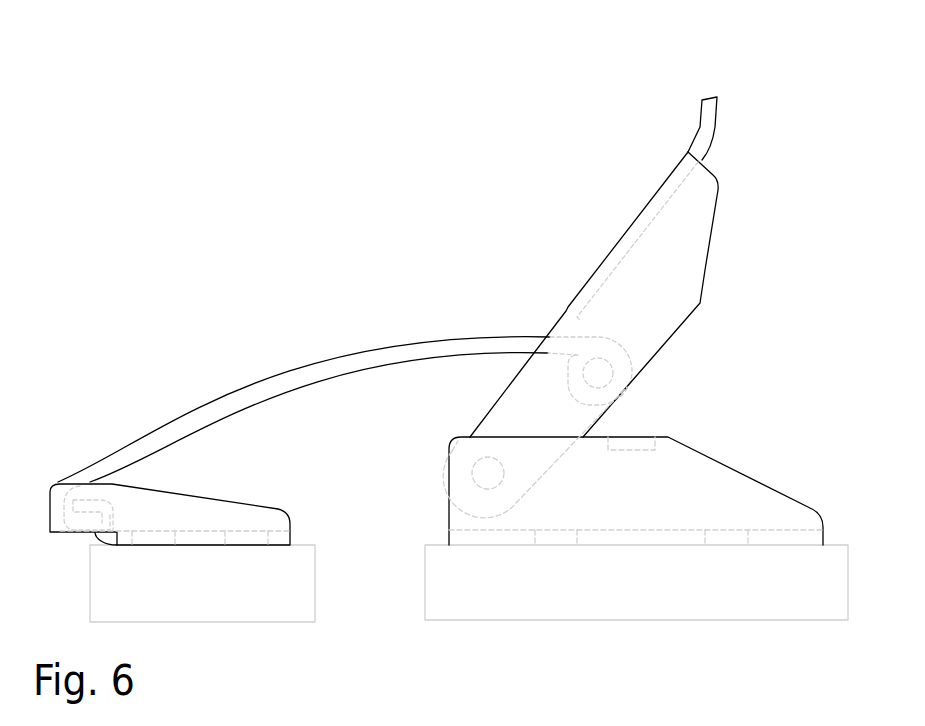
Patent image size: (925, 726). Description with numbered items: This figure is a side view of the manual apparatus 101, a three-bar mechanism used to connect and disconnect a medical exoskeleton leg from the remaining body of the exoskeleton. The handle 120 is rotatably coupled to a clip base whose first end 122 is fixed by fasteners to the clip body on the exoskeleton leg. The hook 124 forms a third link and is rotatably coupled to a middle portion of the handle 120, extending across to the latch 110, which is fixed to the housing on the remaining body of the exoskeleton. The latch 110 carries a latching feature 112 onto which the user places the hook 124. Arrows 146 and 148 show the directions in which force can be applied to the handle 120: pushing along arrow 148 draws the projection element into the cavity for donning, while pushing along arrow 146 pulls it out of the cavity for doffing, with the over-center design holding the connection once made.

The manual apparatus 101 is at (418, 252).
The latch 110 is at (281, 511).
The latching feature 112 is at (95, 500).
The handle 120 is at (717, 97).
The first end 122 is at (731, 467).
The hook 124 is at (320, 361).
The arrow 146 is at (720, 118).
The arrow 148 is at (698, 117).